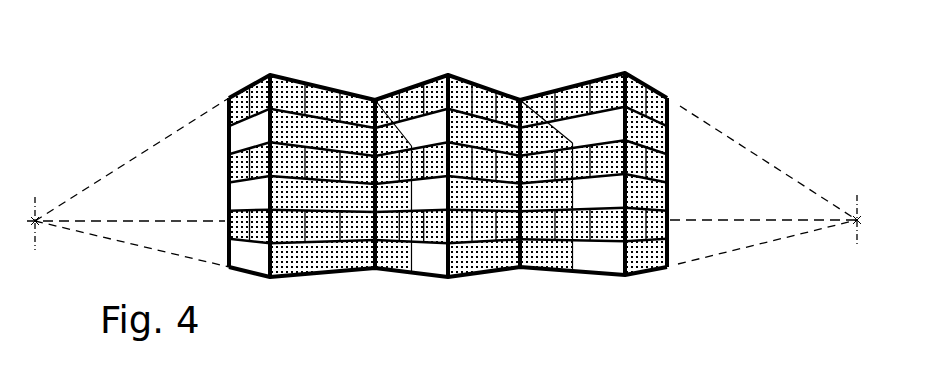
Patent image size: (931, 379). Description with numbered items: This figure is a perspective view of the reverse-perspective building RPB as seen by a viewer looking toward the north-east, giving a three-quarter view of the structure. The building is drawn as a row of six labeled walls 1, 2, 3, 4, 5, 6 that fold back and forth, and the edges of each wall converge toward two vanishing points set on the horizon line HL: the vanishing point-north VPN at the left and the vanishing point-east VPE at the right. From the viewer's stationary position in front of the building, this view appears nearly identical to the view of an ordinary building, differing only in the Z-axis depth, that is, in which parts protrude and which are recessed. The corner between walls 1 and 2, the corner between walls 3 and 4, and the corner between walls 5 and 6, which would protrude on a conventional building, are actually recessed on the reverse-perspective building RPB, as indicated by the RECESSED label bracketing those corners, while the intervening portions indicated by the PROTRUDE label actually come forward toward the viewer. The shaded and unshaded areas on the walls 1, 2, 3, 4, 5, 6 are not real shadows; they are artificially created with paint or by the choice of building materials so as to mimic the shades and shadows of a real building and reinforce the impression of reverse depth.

The wall 1 is at (253, 263).
The wall 2 is at (315, 263).
The wall 3 is at (403, 267).
The wall 4 is at (492, 267).
The wall 5 is at (587, 260).
The wall 6 is at (650, 265).
The reverse-perspective building RPB is at (652, 60).
The recessed corners RECESSED is at (625, 72).
The protruding portions PROTRUDE is at (227, 275).
The horizon line HL is at (748, 219).
The vanishing point-north VPN is at (36, 220).
The vanishing point-east VPE is at (856, 219).